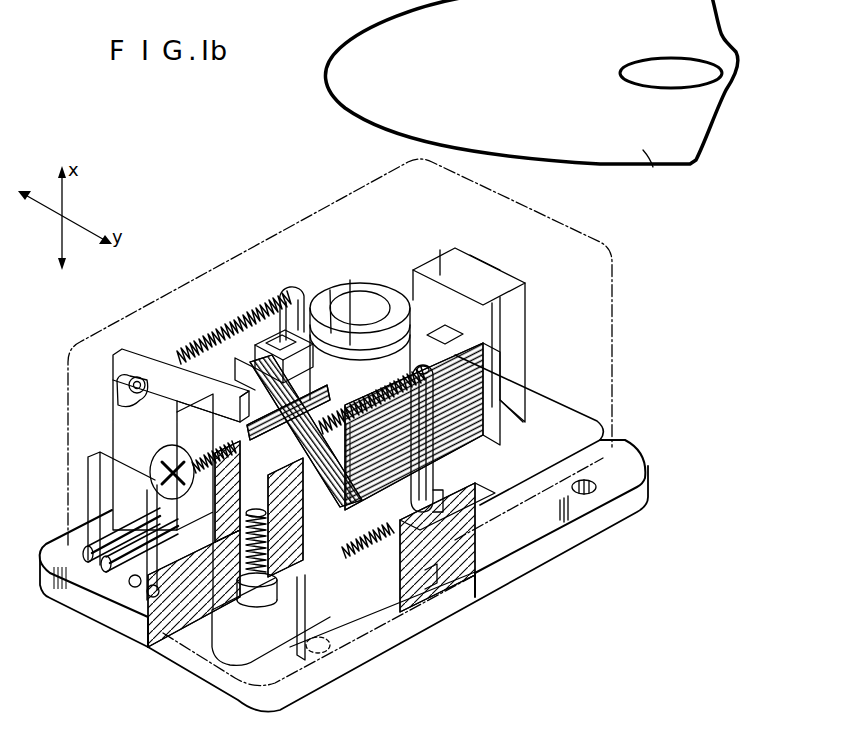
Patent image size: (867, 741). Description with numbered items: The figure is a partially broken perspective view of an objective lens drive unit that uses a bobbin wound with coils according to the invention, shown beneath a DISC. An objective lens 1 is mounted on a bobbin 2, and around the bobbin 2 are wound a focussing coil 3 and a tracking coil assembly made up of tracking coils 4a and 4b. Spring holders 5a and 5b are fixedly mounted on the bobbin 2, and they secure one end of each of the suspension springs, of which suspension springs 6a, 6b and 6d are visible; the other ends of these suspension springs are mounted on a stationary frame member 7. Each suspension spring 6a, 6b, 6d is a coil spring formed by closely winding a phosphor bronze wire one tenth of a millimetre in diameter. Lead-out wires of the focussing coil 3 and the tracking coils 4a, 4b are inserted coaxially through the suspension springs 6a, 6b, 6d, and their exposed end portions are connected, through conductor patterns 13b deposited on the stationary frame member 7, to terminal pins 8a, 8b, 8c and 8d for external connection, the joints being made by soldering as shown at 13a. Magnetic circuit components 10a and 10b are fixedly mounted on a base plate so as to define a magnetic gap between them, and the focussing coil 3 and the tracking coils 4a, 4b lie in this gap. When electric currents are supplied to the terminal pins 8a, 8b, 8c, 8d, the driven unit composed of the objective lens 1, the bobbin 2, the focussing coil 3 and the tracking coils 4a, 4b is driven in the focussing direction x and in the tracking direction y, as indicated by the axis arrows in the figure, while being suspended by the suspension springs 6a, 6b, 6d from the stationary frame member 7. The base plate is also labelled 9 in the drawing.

The objective lens 1 is at (345, 300).
The bobbin 2 is at (258, 318).
The focussing coil 3 is at (470, 377).
The tracking coil 4a is at (527, 367).
The tracking coil 4b is at (330, 520).
The spring holder 5a is at (430, 480).
The spring holder 5b is at (285, 325).
The suspension spring 6a is at (375, 400).
The suspension spring 6b is at (375, 532).
The suspension spring 6d is at (253, 363).
The stationary frame member 7 is at (183, 373).
The terminal pin 8a is at (85, 548).
The terminal pin 8b is at (110, 570).
The terminal pin 8c is at (135, 582).
The terminal pin 8d is at (153, 592).
The base 9 is at (623, 437).
The magnetic circuit component 10a is at (470, 252).
The magnetic circuit component 10b is at (148, 412).
The soldering 13a is at (128, 388).
The conductor pattern 13b is at (113, 432).
The disc DISC is at (531, 97).